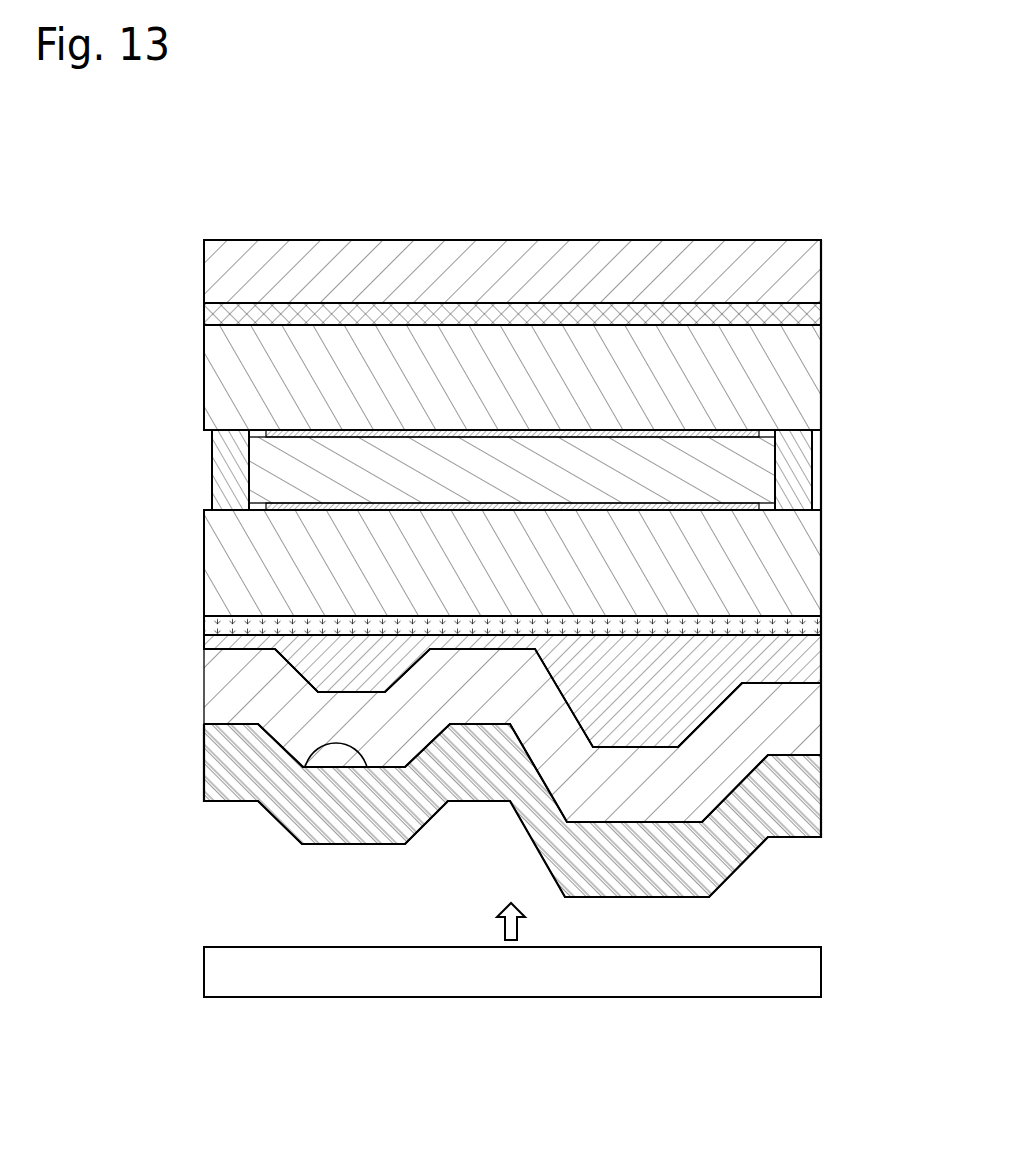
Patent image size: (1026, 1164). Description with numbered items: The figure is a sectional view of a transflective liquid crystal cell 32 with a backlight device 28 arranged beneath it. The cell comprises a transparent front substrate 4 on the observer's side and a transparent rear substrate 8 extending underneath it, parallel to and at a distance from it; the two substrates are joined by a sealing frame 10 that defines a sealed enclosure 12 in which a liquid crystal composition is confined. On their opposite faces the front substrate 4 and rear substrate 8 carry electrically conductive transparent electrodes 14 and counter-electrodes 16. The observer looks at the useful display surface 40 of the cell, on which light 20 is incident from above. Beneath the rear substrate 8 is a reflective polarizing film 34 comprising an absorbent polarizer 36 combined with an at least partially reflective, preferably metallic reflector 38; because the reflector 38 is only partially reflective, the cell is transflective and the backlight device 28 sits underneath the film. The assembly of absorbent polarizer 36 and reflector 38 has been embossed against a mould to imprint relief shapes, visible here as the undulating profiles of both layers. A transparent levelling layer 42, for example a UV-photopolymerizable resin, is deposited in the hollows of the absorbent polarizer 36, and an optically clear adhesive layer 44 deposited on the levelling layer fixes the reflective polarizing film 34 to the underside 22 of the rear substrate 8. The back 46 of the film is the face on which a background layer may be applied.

The front substrate 4 is at (798, 363).
The rear substrate 8 is at (800, 552).
The sealing frame 10 is at (787, 459).
The sealed enclosure 12 is at (522, 465).
The electrodes 14 is at (290, 437).
The counter-electrodes 16 is at (290, 508).
The light 20 is at (370, 222).
The underside 22 is at (331, 618).
The backlight device 28 is at (787, 972).
The liquid crystal cell 32 is at (467, 382).
The reflective polarizing film 34 is at (467, 568).
The absorbent polarizer 36 is at (787, 710).
The reflector 38 is at (787, 792).
The useful display surface 40 is at (821, 228).
The transparent levelling layer 42 is at (812, 660).
The optically clear adhesive layer 44 is at (813, 632).
The back 46 is at (305, 767).